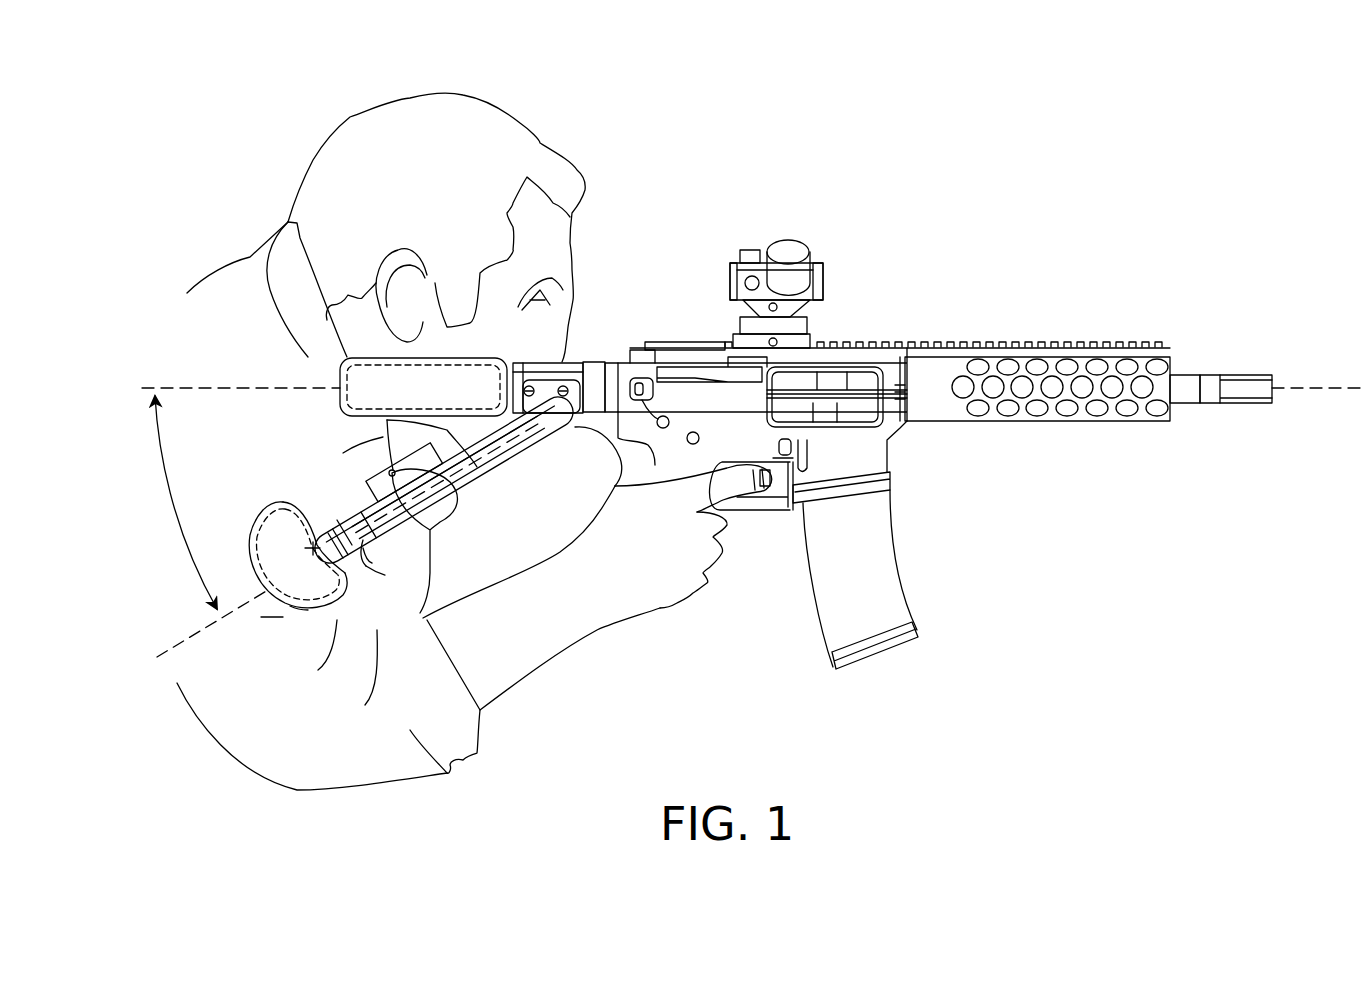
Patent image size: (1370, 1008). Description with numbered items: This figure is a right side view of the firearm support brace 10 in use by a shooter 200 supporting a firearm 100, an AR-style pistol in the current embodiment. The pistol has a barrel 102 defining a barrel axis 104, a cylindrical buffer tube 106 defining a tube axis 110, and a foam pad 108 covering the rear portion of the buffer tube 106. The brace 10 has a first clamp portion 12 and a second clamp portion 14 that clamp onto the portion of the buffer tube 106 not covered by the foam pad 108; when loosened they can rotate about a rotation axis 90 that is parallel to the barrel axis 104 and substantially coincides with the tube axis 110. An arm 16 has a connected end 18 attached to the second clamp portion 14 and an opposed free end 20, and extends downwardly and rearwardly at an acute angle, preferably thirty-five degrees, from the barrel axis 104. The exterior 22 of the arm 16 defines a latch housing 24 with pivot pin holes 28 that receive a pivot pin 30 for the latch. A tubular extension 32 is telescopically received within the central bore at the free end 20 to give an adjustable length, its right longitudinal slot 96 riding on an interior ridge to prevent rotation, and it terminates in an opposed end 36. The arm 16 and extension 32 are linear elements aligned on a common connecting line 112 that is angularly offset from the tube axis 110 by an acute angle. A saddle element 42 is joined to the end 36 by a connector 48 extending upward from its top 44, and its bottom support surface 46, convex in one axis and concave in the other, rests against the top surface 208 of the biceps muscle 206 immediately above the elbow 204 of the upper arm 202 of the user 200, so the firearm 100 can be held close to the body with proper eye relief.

The firearm support brace 10 is at (513, 466).
The first clamp portion 12 is at (568, 366).
The second clamp portion 14 is at (548, 388).
The arm 16 is at (506, 473).
The connected end 18 is at (605, 456).
The free end 20 is at (363, 540).
The exterior 22 is at (500, 448).
The latch housing 24 is at (373, 475).
The pivot pin holes 28 is at (420, 505).
The pivot pin 30 is at (489, 478).
The tubular extension 32 is at (366, 551).
The opposed end 36 is at (366, 566).
The saddle element 42 is at (243, 548).
The top 44 is at (305, 520).
The bottom support surface 46 is at (300, 612).
The connector 48 is at (305, 547).
The rotation axis 90 is at (203, 388).
The right longitudinal slot 96 is at (338, 532).
The firearm 100 is at (884, 340).
The barrel 102 is at (1207, 375).
The barrel axis 104 is at (1278, 386).
The cylindrical buffer tube 106 is at (595, 362).
The foam pad 108 is at (265, 253).
The tube axis 110 is at (273, 387).
The connecting line 112 is at (160, 655).
The shooter 200 is at (540, 135).
The upper arm 202 is at (273, 485).
The elbow 204 is at (298, 792).
The biceps muscle 206 is at (273, 617).
The top surface 208 is at (363, 610).